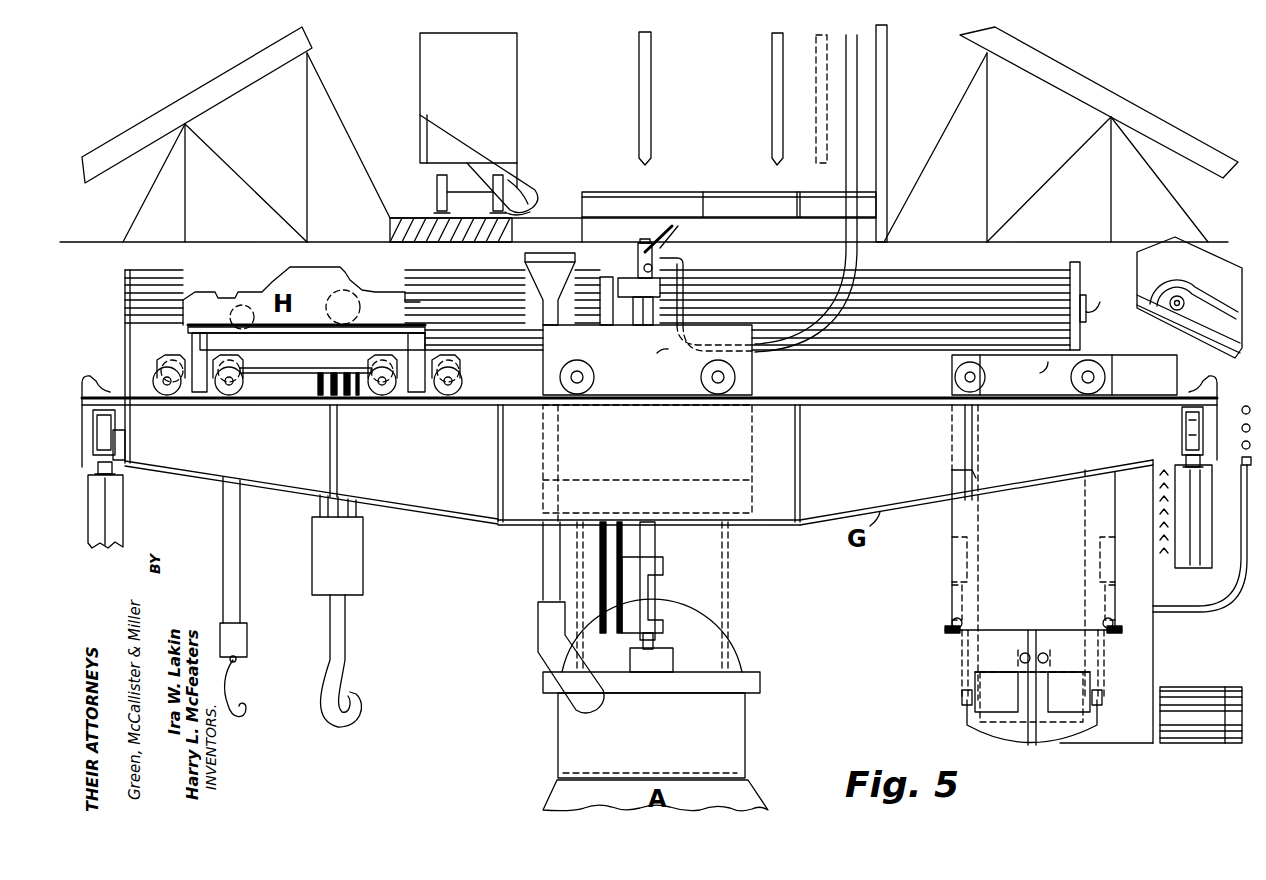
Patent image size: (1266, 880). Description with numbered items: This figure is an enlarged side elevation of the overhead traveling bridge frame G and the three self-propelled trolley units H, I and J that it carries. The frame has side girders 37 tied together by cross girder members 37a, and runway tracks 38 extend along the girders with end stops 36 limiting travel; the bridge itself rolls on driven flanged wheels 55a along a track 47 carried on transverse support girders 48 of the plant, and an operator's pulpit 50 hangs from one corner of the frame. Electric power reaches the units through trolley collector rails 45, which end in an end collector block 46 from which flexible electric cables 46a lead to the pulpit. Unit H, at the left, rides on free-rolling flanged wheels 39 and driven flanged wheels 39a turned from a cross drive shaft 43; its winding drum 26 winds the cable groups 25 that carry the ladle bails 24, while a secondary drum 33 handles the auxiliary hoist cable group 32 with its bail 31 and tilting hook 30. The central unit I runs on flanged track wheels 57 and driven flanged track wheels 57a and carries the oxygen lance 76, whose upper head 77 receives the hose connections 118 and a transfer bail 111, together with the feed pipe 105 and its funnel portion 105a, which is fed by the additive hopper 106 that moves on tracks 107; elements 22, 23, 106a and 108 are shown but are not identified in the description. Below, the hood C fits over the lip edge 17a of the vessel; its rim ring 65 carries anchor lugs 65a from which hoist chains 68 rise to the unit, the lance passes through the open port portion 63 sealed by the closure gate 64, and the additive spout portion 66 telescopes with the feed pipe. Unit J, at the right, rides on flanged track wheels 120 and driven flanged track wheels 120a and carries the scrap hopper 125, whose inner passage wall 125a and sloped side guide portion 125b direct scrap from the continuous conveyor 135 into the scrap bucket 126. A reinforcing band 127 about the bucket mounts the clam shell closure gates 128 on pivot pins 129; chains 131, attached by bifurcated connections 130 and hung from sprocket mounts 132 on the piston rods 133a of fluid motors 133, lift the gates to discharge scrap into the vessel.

The lip edge 17a is at (733, 776).
The base block 22 is at (392, 231).
The hoist hook 23 is at (354, 666).
The ladle bails 24 is at (363, 548).
The cable groups 25 is at (318, 506).
The winding drum 26 is at (345, 290).
The tilting hook 30 is at (247, 708).
The bail 31 is at (248, 647).
The auxiliary hoist cable group 32 is at (241, 550).
The secondary drum 33 is at (242, 305).
The end stops 36 is at (1224, 380).
The side girders 37 is at (928, 492).
The cross girder members 37a is at (126, 450).
The runway tracks 38 is at (847, 380).
The free-rolling flanged wheels 39 is at (212, 398).
The driven flanged wheels 39a is at (396, 400).
The cross drive shaft 43 is at (461, 374).
The trolley collector rails 45 is at (915, 263).
The end collector block 46 is at (1080, 271).
The flexible electric cables 46a is at (1101, 303).
The track 47 is at (118, 474).
The transverse support girders 48 is at (124, 520).
The operator's pulpit 50 is at (1134, 745).
The driven flanged wheels 55a is at (116, 430).
The flanged track wheels 57 is at (735, 378).
The driven flanged track wheels 57a is at (594, 380).
The open port portion 63 is at (674, 661).
The closure gate 64 is at (656, 647).
The rim ring 65 is at (761, 686).
The anchor lugs 65a is at (590, 670).
The additive spout portion 66 is at (538, 659).
The hoist chains 68 is at (575, 547).
The oxygen lance 76 is at (772, 108).
The upper heads 77 is at (638, 258).
The feed pipe 105 is at (541, 580).
The funnel portion 105a is at (525, 264).
The additive hopper 106 is at (517, 52).
The chute end 106a is at (523, 197).
The tracks 107 is at (520, 210).
The chute 108 is at (515, 158).
The transfer bail 111 is at (670, 238).
The hose connections 118 is at (846, 168).
The flanged track wheels 120 is at (1106, 376).
The driven flanged track wheels 120a is at (955, 370).
The scrap hopper 125 is at (952, 588).
The inner passage wall 125a is at (980, 510).
The side guide portion 125b is at (1152, 418).
The scrap bucket 126 is at (975, 679).
The reinforcing band 127 is at (1005, 672).
The clam shell closure gates 128 is at (980, 736).
The pivot pins 129 is at (1027, 652).
The bifurcated connections 130 is at (962, 700).
The chains 131 is at (963, 652).
The sprocket mount 132 is at (950, 627).
The fluid motor 133 is at (952, 530).
The piston rod 133a is at (947, 600).
The continuous conveyor 135 is at (1205, 292).